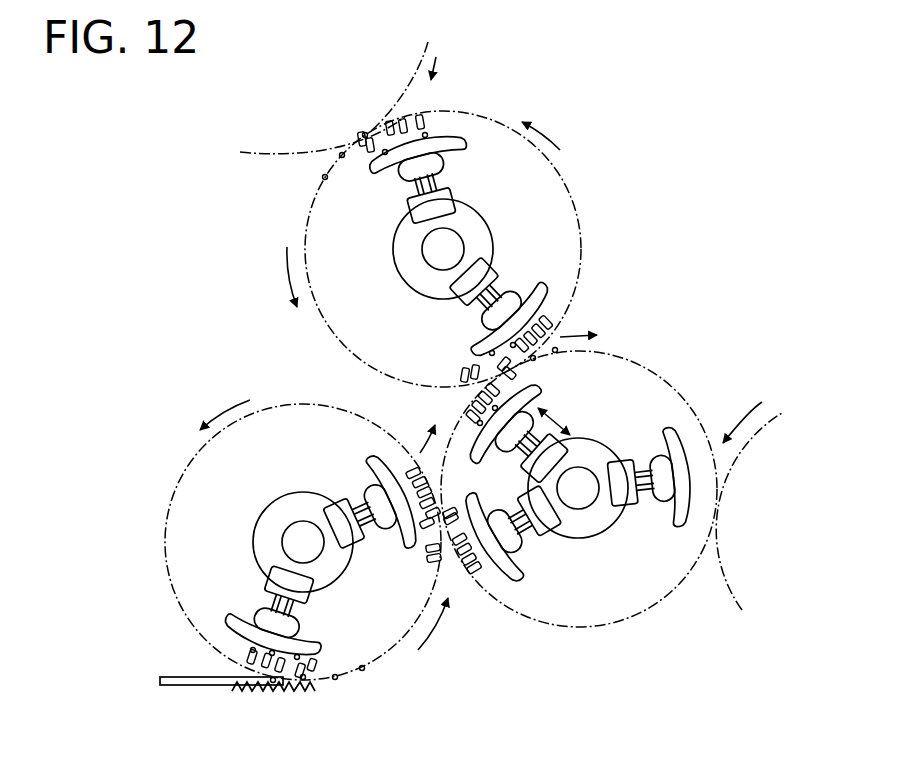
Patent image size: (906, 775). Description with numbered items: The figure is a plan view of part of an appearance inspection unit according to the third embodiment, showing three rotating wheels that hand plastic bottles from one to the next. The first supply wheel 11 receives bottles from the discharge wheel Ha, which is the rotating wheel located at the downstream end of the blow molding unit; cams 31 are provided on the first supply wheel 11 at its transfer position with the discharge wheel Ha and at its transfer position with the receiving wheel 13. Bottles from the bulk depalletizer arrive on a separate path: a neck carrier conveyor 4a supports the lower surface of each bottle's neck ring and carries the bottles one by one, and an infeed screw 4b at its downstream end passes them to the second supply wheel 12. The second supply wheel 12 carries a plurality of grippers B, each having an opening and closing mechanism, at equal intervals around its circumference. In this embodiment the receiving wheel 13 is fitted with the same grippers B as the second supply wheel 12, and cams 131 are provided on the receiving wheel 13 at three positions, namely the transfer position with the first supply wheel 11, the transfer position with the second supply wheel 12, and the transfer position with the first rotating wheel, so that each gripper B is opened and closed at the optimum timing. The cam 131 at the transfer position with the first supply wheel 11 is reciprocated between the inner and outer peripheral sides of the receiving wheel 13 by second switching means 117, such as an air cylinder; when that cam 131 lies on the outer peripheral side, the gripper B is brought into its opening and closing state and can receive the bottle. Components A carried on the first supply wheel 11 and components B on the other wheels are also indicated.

The first supply wheel 11 is at (578, 195).
The second supply wheel 12 is at (397, 647).
The receiving wheel 13 is at (648, 610).
The cams 31 is at (461, 153).
The cams 131 is at (523, 394).
The second switching means 117 is at (537, 430).
The first components A is at (417, 124).
The grippers B is at (535, 368).
The discharge wheel Ha is at (428, 42).
The neck carrier conveyor 4a is at (190, 686).
The infeed screw 4b is at (248, 692).